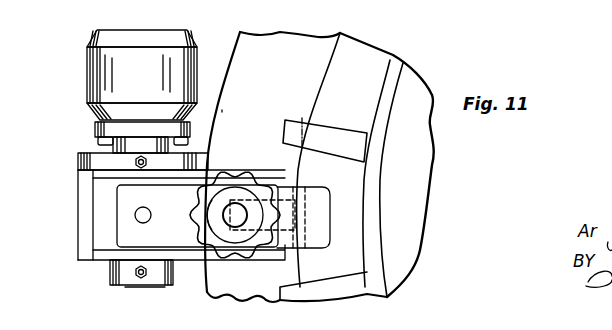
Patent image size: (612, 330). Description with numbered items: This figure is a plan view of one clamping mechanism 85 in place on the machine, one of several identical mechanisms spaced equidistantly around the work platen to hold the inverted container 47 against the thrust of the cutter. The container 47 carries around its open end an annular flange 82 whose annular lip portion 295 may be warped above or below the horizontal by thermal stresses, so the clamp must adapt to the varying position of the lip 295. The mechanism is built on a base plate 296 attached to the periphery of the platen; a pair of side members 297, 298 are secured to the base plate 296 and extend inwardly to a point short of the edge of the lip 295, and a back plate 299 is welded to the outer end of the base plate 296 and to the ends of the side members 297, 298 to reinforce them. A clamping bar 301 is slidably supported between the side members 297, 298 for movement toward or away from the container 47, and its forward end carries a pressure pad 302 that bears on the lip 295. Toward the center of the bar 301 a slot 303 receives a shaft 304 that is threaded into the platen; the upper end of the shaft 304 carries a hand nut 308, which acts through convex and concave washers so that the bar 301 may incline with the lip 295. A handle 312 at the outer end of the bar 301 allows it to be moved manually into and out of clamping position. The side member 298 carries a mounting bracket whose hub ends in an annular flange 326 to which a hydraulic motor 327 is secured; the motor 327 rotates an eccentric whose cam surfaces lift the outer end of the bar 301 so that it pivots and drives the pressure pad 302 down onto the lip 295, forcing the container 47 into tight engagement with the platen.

The hydraulic motor 327 is at (108, 75).
The clamping mechanism 85 is at (78, 146).
The side member 298 is at (82, 176).
The clamping bar 301 is at (123, 197).
The back plate 299 is at (85, 224).
The side member 297 is at (83, 254).
The hand nut 308 is at (198, 207).
The handle 312 is at (137, 211).
The shaft 304 is at (236, 205).
The slot 303 is at (287, 203).
The pressure pad 302 is at (317, 210).
The annular flange 82 is at (387, 59).
The container 47 is at (390, 92).
The annular lip portion 295 is at (237, 72).
The base plate 296 is at (479, 7).
The annular flange 326 is at (296, 5).